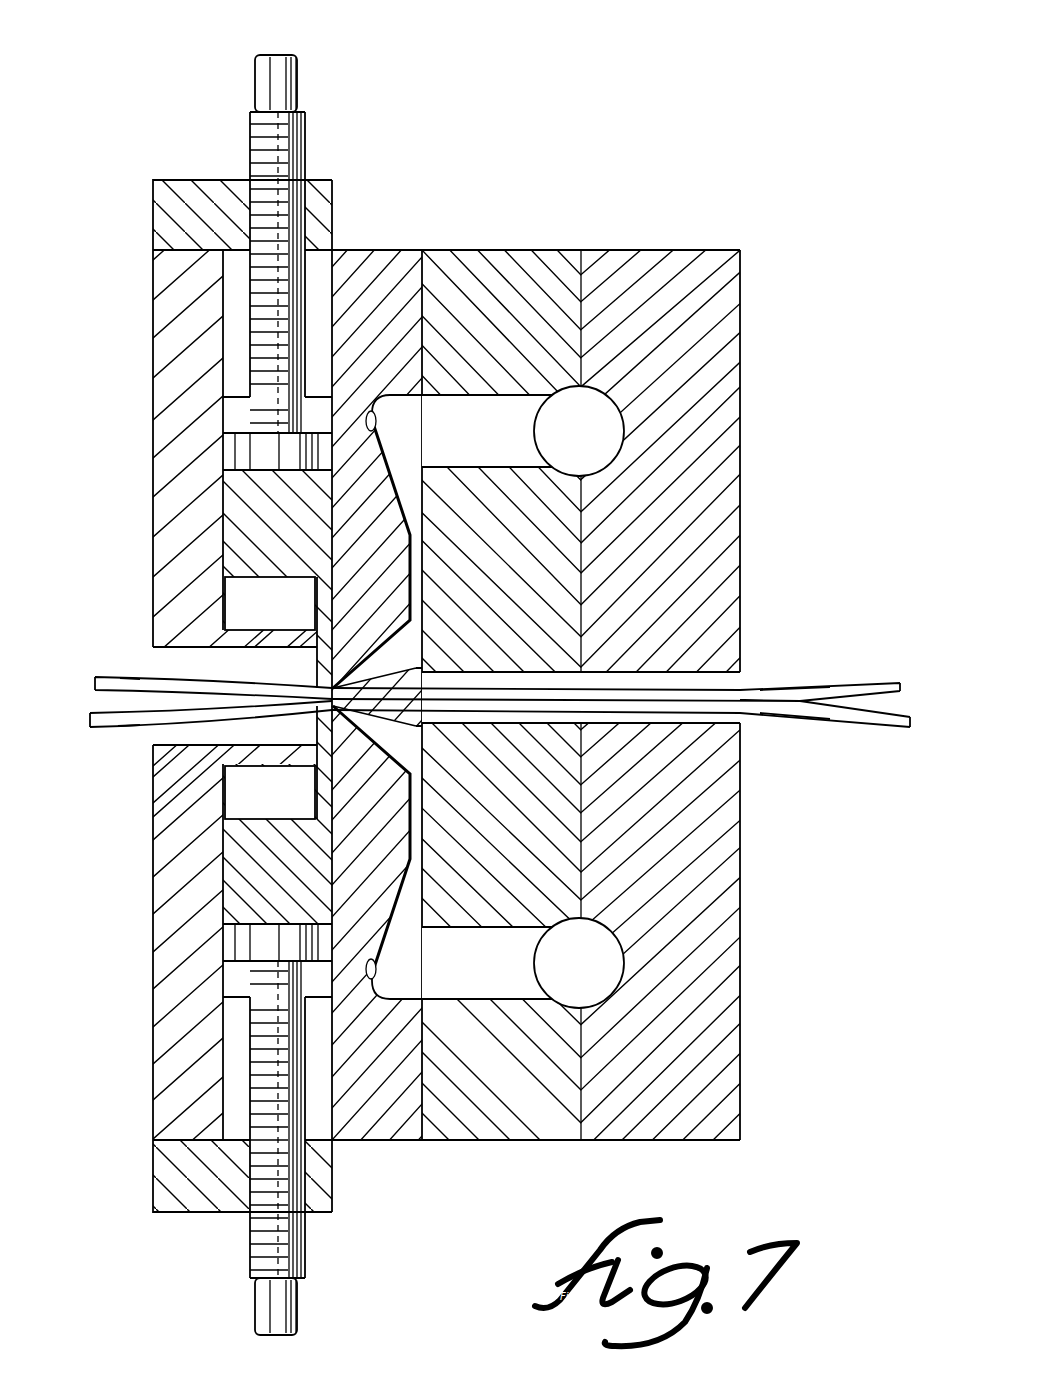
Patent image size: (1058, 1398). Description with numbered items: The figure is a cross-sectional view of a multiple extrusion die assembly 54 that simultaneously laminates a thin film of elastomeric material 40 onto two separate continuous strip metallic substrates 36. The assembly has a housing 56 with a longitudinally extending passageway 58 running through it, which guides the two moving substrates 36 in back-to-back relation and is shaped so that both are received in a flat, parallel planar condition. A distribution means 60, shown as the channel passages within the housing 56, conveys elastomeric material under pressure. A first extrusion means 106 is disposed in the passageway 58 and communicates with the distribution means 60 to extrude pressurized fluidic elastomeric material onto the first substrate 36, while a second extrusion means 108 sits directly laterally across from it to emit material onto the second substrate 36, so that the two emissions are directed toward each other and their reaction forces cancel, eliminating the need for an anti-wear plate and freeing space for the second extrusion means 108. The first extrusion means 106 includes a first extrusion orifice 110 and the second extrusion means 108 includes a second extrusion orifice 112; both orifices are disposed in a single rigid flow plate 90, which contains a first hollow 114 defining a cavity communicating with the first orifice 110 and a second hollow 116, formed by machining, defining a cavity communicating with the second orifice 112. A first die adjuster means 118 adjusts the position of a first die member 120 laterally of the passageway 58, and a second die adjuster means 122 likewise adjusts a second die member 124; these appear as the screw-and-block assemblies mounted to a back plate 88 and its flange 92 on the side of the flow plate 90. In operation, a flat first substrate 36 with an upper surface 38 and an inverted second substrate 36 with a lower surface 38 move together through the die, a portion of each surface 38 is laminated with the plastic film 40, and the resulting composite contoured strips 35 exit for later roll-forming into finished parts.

The composite contoured strip 35 is at (127, 668).
The continuous strip metallic substrate 36 is at (880, 716).
The substrate surface 38 is at (790, 688).
The elastomeric material film 40 is at (103, 676).
The multiple extrusion die assembly 54 is at (745, 249).
The housing 56 is at (742, 1142).
The passageway 58 is at (645, 680).
The distribution means 60 is at (614, 455).
The inner die block 88 is at (581, 252).
The flow plate 90 is at (370, 250).
The back plate 92 is at (153, 275).
The first extrusion means 106 is at (373, 647).
The second extrusion means 108 is at (373, 749).
The first extrusion orifice 110 is at (328, 670).
The second extrusion orifice 112 is at (326, 722).
The first hollow 114 is at (372, 412).
The second hollow 116 is at (372, 982).
The first die adjuster means 118 is at (298, 57).
The first die member 120 is at (235, 545).
The second die adjuster means 122 is at (300, 1325).
The second die member 124 is at (240, 875).